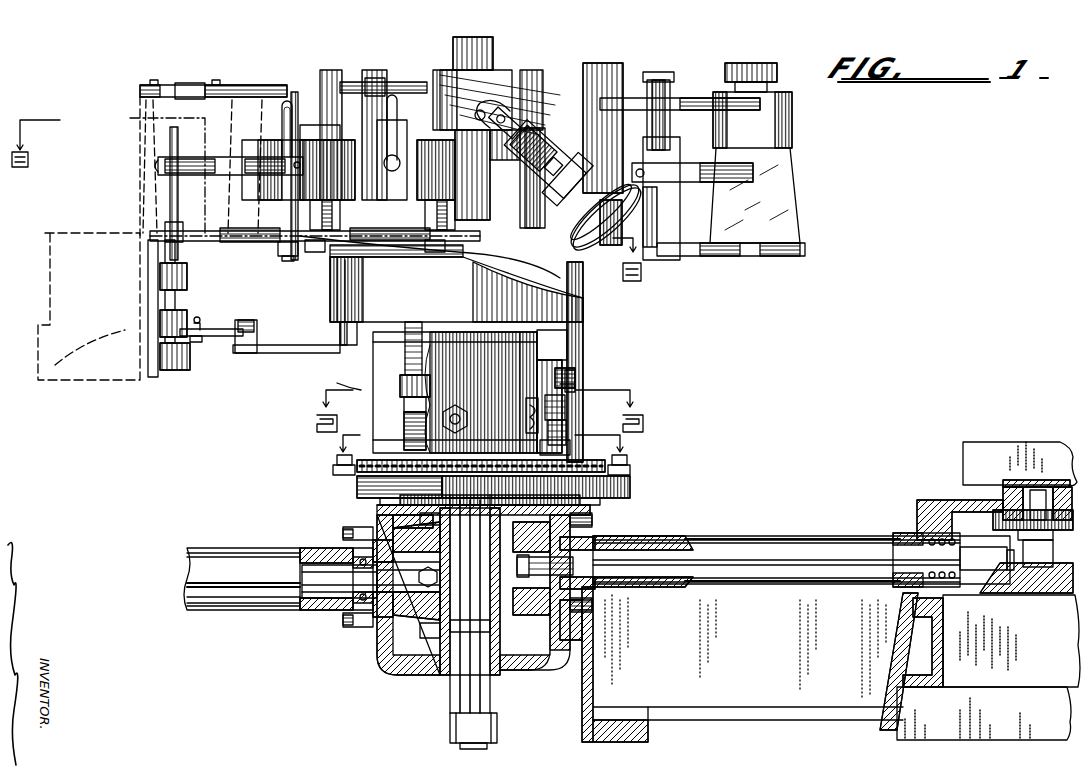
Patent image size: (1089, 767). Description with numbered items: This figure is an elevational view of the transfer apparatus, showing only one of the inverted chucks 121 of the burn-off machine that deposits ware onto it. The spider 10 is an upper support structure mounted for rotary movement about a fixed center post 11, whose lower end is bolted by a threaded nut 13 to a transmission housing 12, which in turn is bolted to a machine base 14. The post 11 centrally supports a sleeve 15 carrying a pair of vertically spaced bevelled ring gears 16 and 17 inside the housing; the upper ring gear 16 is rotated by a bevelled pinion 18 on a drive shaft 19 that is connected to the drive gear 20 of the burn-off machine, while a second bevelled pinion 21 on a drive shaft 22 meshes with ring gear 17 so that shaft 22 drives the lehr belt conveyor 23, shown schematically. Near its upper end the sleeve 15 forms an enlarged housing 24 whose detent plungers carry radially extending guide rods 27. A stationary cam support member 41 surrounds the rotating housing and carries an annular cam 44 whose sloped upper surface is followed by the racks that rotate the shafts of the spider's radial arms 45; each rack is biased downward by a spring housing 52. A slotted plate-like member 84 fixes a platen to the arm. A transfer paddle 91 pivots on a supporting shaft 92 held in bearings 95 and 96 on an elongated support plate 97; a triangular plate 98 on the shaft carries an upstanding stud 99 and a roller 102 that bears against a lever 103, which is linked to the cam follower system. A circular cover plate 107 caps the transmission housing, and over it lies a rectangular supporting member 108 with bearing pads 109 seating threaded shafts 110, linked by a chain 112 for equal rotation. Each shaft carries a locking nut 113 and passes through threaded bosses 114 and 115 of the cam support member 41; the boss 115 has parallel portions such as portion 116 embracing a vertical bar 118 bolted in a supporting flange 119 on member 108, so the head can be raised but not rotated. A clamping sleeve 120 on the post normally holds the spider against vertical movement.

The spider 10 is at (543, 123).
The center post 11 is at (490, 45).
The transmission housing 12 is at (420, 662).
The threaded nut 13 is at (475, 726).
The machine base 14 is at (595, 738).
The sleeve 15 is at (435, 548).
The upper bevelled ring gear 16 is at (415, 528).
The lower bevelled ring gear 17 is at (420, 617).
The bevelled pinion 18 is at (578, 540).
The drive shaft 19 is at (640, 555).
The drive gear 20 is at (1045, 590).
The second bevelled pinion 21 is at (385, 597).
The drive shaft 22 is at (316, 556).
The lehr belt conveyor 23 is at (50, 257).
The enlarged housing 24 is at (433, 421).
The guide rods 27 is at (562, 418).
The cam support member 41 is at (455, 363).
The annular cam 44 is at (342, 300).
The arms 45 is at (615, 130).
The spring housing 52 is at (435, 83).
The plate-like member 84 is at (286, 85).
The transfer paddle 91 is at (185, 166).
The supporting shaft 92 is at (160, 263).
The bearing 95 is at (178, 370).
The bearing 96 is at (162, 278).
The support plate 97 is at (148, 305).
The triangular plate 98 is at (216, 330).
The upstanding stud 99 is at (199, 319).
The roller 102 is at (247, 347).
The lever 103 is at (296, 347).
The cover plate 107 is at (600, 498).
The supporting member 108 is at (626, 481).
The bearing pads 109 is at (405, 481).
The threaded shafts 110 is at (407, 353).
The chain 112 is at (385, 469).
The locking nut 113 is at (404, 402).
The threaded boss 114 is at (338, 383).
The threaded boss 115 is at (582, 380).
The radially extending portion 116 is at (575, 375).
The vertical bar 118 is at (575, 325).
The supporting flange 119 is at (566, 446).
The clamping sleeve 120 is at (486, 70).
The inverted chuck 121 is at (790, 125).